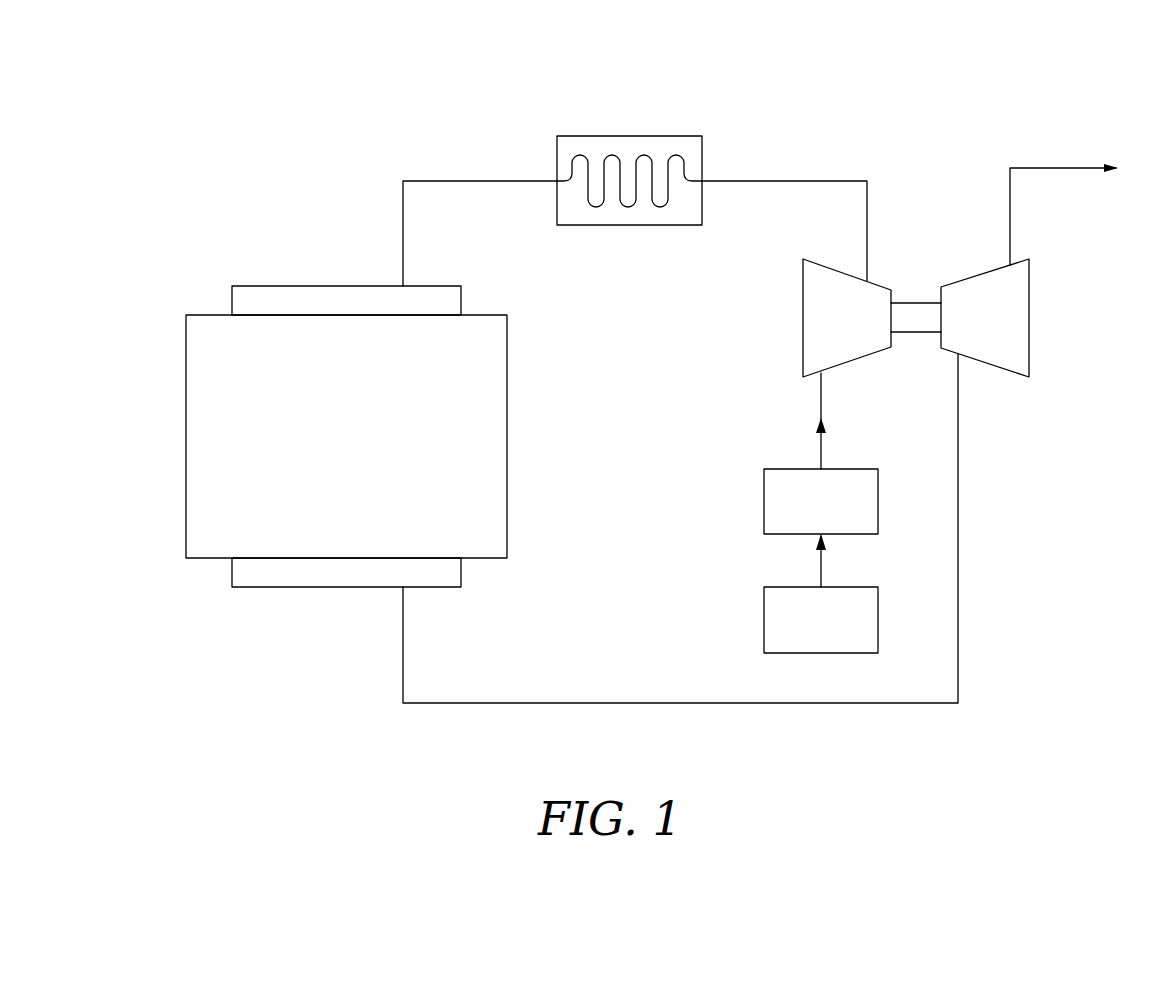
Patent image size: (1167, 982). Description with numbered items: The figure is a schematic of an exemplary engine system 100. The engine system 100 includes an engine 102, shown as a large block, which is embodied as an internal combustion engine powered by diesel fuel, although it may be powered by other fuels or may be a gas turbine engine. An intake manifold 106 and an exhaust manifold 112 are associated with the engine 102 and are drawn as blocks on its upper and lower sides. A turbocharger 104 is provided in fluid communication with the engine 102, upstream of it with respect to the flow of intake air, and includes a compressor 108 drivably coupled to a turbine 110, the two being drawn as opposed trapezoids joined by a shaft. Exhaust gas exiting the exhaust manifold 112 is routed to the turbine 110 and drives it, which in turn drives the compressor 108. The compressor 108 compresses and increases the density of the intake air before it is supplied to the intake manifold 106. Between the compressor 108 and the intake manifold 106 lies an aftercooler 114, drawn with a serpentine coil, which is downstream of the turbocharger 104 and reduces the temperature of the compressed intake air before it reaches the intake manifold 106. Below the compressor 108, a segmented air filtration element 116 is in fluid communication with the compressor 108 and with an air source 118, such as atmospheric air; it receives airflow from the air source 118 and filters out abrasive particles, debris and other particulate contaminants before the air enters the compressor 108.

The engine system 100 is at (940, 98).
The engine 102 is at (365, 448).
The turbocharger 104 is at (975, 336).
The intake manifold 106 is at (281, 286).
The compressor 108 is at (833, 326).
The turbine 110 is at (970, 326).
The exhaust manifold 112 is at (281, 587).
The aftercooler 114 is at (647, 136).
The air filtration element 116 is at (802, 515).
The air source 118 is at (802, 633).